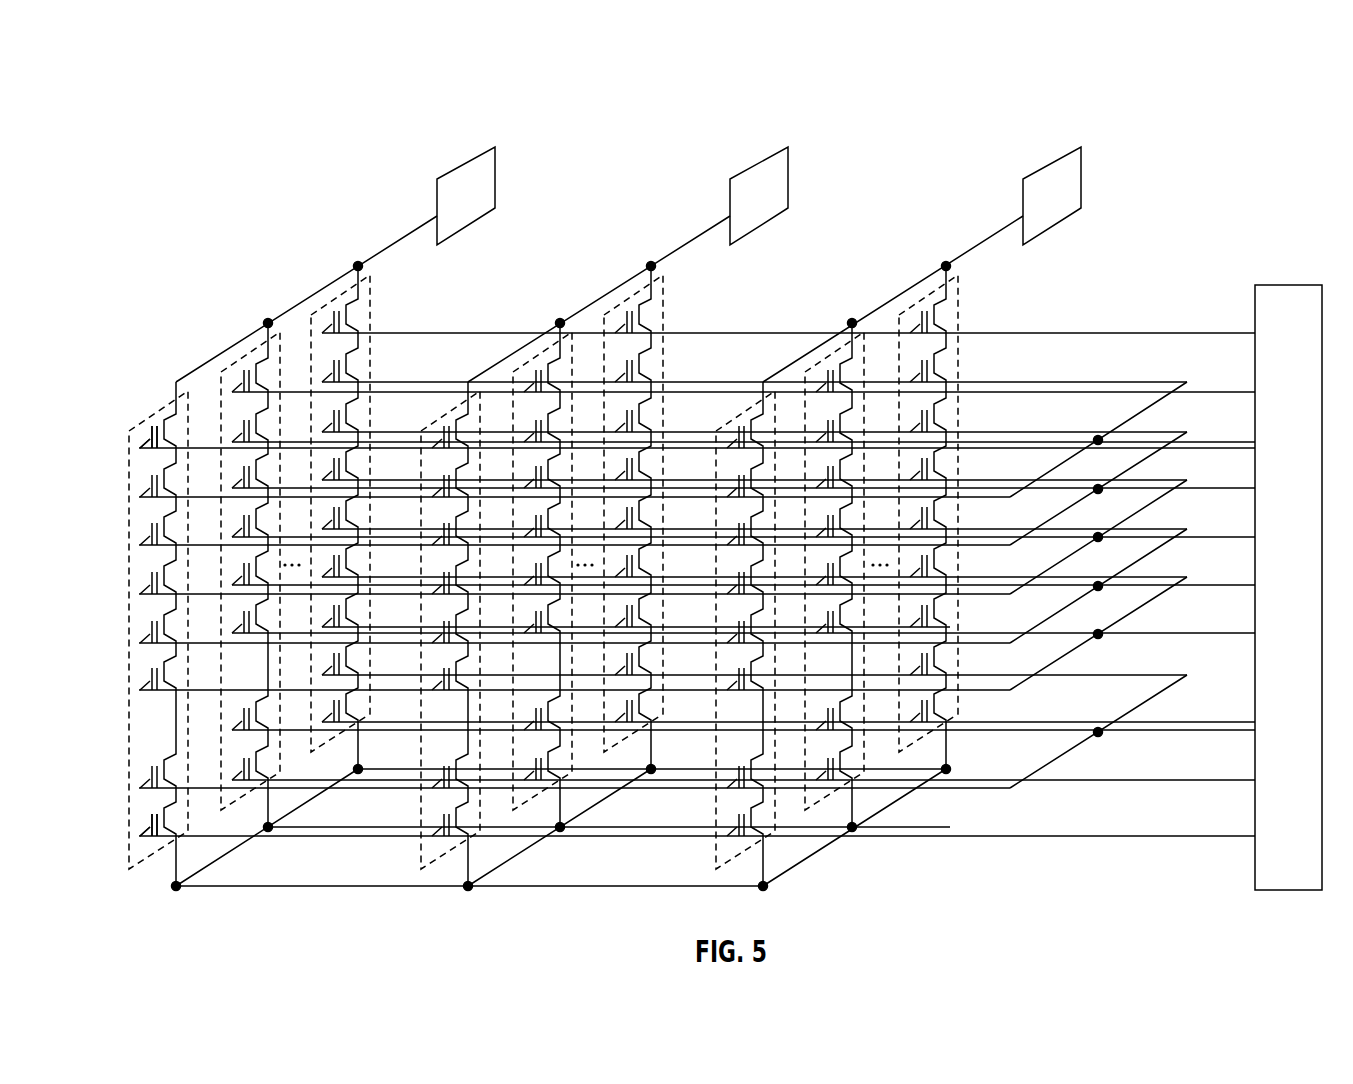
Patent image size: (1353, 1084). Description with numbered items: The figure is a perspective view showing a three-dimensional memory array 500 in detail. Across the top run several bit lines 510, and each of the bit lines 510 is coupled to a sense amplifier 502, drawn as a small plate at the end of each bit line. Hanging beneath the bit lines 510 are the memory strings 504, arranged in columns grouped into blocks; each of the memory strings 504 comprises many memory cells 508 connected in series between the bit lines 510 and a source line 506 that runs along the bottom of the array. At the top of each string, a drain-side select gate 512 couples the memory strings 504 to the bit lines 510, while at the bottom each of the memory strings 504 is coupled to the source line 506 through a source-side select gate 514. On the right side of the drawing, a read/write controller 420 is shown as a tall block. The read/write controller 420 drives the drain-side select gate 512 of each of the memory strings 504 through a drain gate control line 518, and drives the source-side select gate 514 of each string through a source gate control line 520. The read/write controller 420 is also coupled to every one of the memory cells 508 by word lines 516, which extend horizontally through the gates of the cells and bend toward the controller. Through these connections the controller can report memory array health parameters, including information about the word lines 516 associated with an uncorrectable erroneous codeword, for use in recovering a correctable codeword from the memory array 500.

The 3D memory array 500 is at (919, 100).
The sense amplifier 502 is at (478, 182).
The memory string 504 is at (158, 380).
The source line 506 is at (798, 865).
The memory cell 508 is at (226, 582).
The bit line 510 is at (388, 246).
The drain-side select gate 512 is at (159, 431).
The source-side select gate 514 is at (133, 871).
The word line 516 is at (1162, 598).
The drain gate control line 518 is at (1188, 332).
The source gate control line 520 is at (1077, 835).
The read/write controller 420 is at (1278, 284).